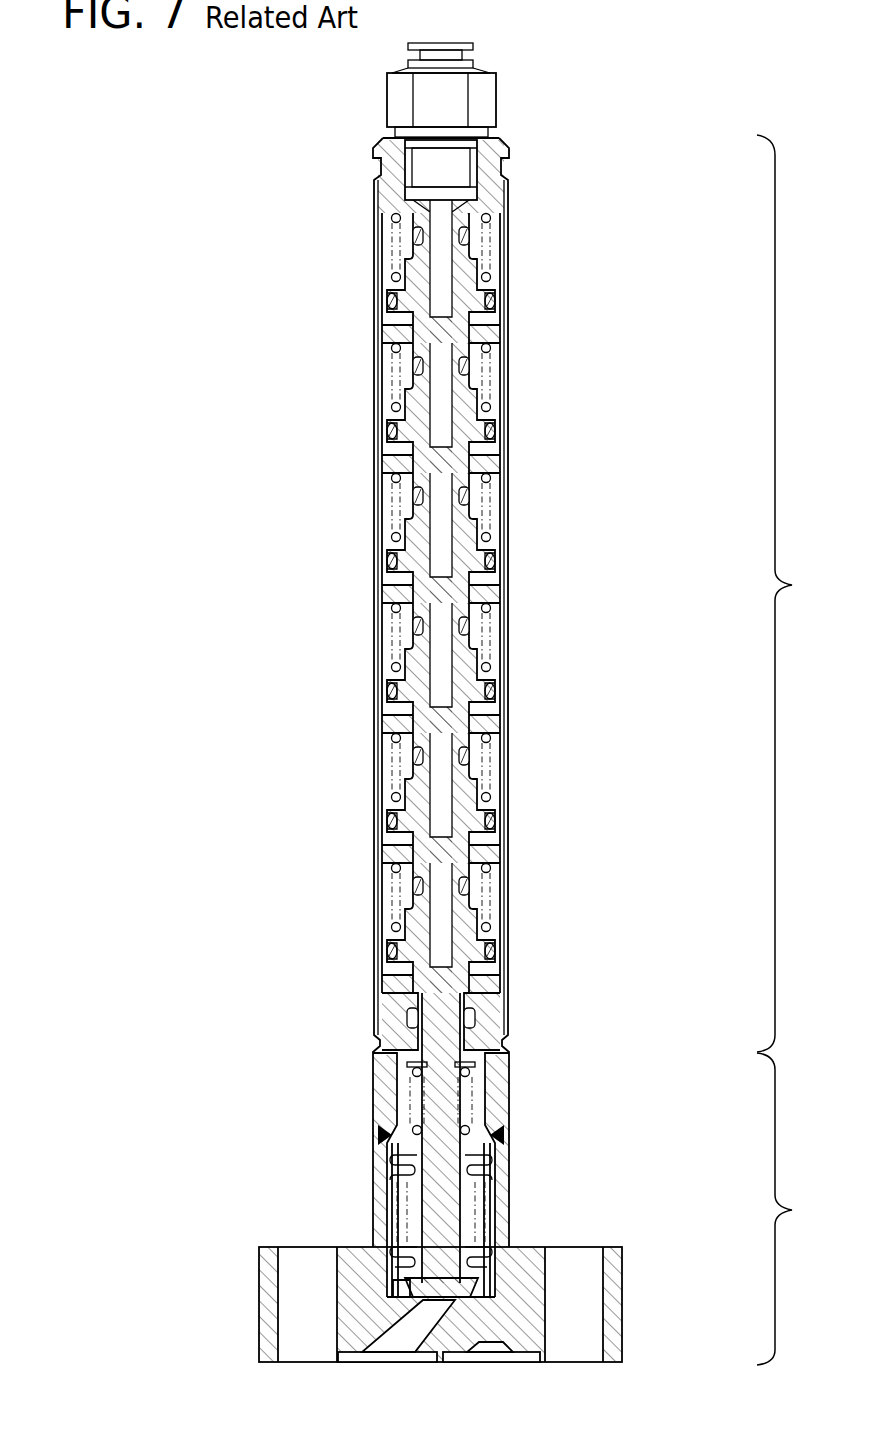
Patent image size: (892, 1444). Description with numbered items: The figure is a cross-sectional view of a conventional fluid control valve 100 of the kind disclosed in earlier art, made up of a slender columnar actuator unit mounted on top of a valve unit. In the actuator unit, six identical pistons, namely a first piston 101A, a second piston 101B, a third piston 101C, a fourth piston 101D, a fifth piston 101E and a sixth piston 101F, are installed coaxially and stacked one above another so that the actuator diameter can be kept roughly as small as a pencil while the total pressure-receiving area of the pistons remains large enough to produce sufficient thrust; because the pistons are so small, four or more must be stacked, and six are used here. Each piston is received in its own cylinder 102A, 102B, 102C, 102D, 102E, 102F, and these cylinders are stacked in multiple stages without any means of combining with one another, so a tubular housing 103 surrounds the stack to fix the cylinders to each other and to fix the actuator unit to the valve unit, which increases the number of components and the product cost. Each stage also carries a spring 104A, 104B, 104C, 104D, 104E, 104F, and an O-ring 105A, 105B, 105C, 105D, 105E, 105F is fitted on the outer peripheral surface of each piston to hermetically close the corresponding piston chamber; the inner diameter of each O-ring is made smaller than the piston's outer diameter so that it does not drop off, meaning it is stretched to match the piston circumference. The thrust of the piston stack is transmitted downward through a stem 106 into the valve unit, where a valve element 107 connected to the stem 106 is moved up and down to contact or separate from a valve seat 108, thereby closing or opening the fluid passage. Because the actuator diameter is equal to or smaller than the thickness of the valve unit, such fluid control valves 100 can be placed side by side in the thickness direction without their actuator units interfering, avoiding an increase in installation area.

The fluid control valve 100 is at (289, 154).
The tubular housing 103 is at (512, 208).
The first piston 101A is at (467, 931).
The second piston 101B is at (467, 800).
The third piston 101C is at (467, 668).
The fourth piston 101D is at (467, 540).
The fifth piston 101E is at (467, 410).
The sixth piston 101F is at (467, 278).
The cylinder 102A is at (487, 987).
The cylinder 102B is at (487, 857).
The cylinder 102C is at (487, 727).
The cylinder 102D is at (487, 597).
The cylinder 102E is at (487, 466).
The cylinder 102F is at (487, 337).
The spring 104A is at (393, 901).
The spring 104B is at (393, 770).
The spring 104C is at (393, 641).
The spring 104D is at (393, 510).
The spring 104E is at (393, 379).
The spring 104F is at (393, 248).
The O-ring 105A is at (388, 955).
The O-ring 105B is at (388, 823).
The O-ring 105C is at (388, 694).
The O-ring 105D is at (388, 564).
The O-ring 105E is at (388, 434).
The O-ring 105F is at (388, 299).
The stem 106 is at (445, 1187).
The valve element 107 is at (440, 1283).
The valve seat 108 is at (397, 1280).